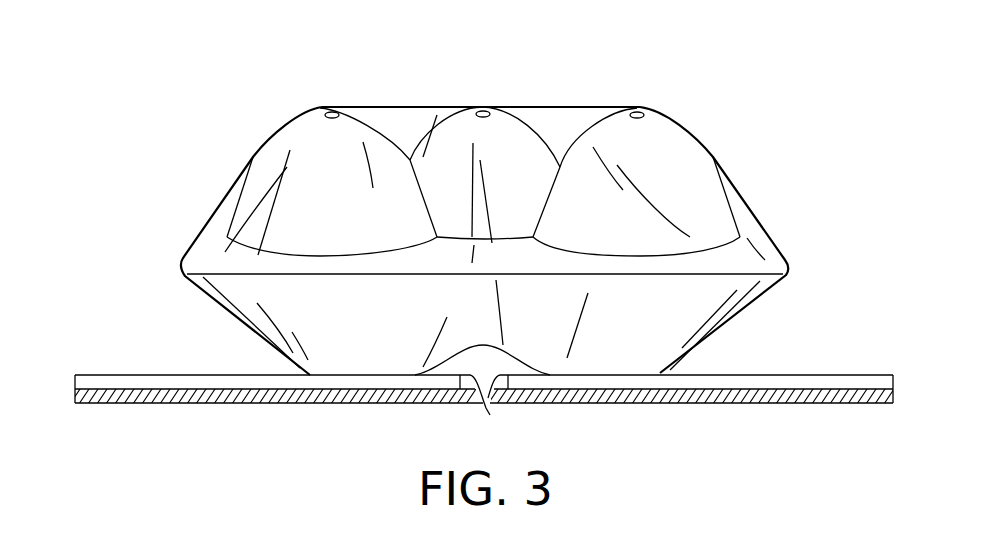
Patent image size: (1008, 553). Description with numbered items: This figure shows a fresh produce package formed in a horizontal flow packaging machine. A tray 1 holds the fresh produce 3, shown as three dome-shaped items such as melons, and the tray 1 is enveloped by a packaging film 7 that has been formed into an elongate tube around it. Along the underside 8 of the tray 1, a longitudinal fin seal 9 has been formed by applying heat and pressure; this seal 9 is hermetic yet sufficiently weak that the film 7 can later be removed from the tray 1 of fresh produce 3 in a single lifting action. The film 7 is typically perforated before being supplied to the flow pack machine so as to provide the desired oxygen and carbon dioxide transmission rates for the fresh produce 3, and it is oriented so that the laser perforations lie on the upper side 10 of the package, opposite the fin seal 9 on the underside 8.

The tray 1 is at (258, 320).
The fresh produce 3 is at (267, 162).
The packaging film 7 is at (396, 120).
The underside 8 is at (317, 377).
The longitudinal fin seal 9 is at (483, 402).
The upper side 10 is at (539, 98).